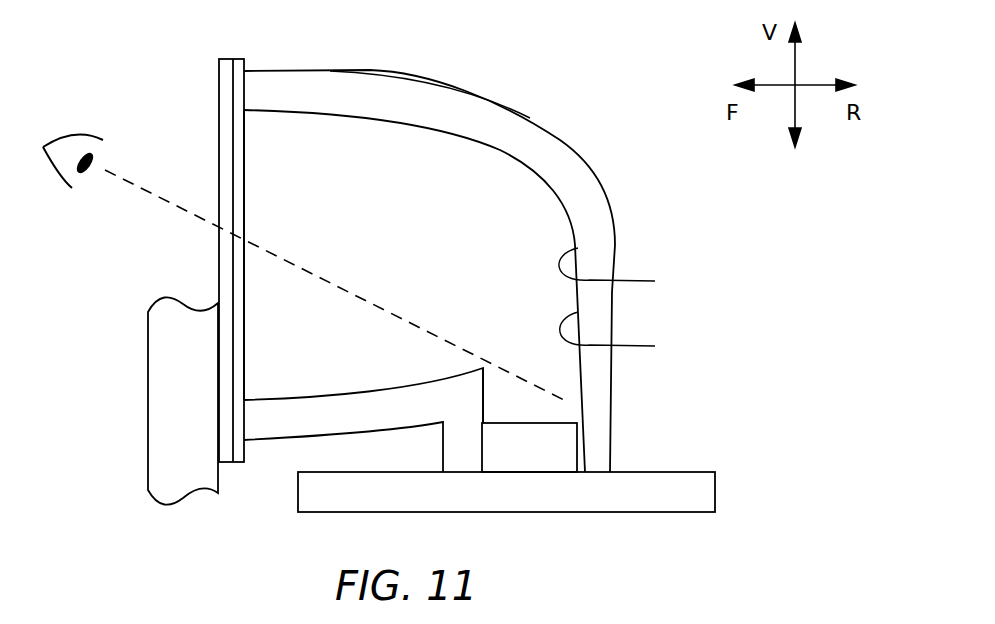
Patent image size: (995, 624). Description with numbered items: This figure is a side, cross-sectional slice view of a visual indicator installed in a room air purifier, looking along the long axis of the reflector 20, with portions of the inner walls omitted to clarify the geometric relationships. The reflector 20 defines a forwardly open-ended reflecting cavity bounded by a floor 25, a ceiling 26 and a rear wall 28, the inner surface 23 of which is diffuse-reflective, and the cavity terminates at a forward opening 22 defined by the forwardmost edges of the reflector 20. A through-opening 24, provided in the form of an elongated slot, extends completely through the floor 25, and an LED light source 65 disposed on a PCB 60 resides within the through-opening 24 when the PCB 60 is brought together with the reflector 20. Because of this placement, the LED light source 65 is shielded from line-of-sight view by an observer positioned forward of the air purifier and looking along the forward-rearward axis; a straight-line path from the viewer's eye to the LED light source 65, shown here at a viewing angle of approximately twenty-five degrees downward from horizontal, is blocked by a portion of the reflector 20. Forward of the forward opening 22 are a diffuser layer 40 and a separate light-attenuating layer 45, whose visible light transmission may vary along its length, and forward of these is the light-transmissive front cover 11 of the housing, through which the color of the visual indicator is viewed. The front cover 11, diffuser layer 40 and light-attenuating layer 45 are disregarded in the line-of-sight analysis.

The front cover 11 is at (198, 402).
The reflector 20 is at (556, 148).
The forward opening 22 is at (246, 213).
The inner surface 23 is at (624, 271).
The through-opening 24 is at (532, 414).
The floor 25 is at (332, 412).
The ceiling 26 is at (312, 93).
The rear wall 28 is at (625, 336).
The diffuser layer 40 is at (228, 122).
The light-attenuating layer 45 is at (237, 155).
The PCB 60 is at (570, 495).
The LED light source 65 is at (546, 462).